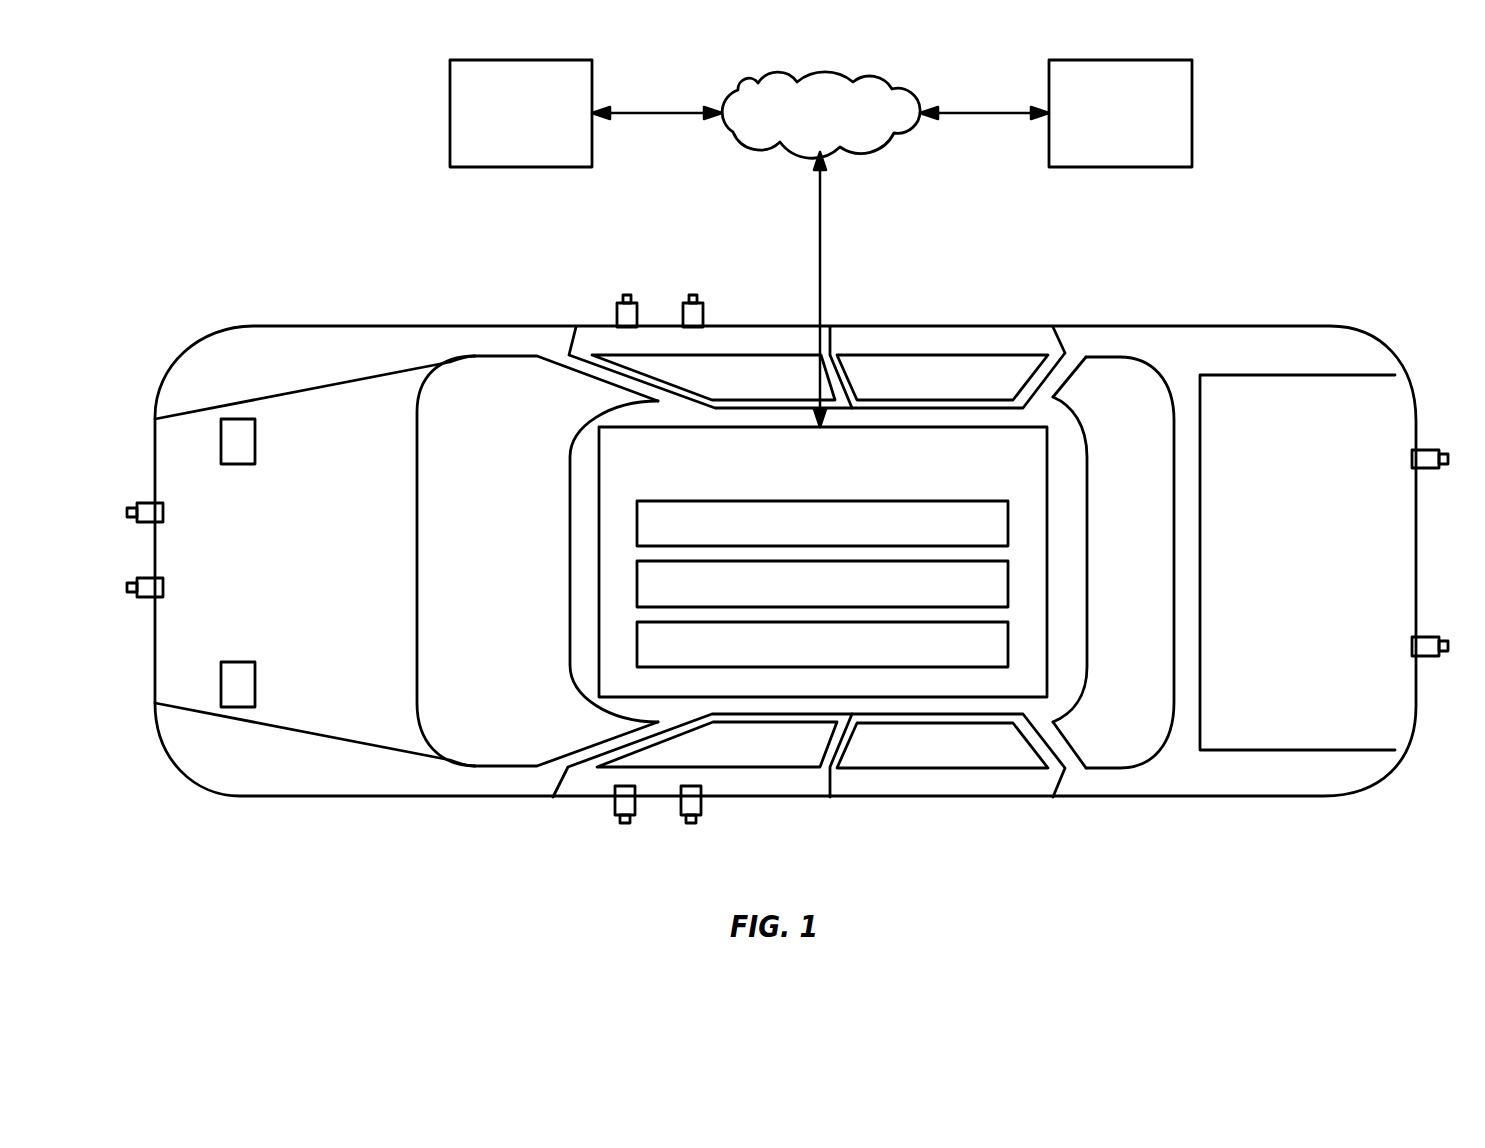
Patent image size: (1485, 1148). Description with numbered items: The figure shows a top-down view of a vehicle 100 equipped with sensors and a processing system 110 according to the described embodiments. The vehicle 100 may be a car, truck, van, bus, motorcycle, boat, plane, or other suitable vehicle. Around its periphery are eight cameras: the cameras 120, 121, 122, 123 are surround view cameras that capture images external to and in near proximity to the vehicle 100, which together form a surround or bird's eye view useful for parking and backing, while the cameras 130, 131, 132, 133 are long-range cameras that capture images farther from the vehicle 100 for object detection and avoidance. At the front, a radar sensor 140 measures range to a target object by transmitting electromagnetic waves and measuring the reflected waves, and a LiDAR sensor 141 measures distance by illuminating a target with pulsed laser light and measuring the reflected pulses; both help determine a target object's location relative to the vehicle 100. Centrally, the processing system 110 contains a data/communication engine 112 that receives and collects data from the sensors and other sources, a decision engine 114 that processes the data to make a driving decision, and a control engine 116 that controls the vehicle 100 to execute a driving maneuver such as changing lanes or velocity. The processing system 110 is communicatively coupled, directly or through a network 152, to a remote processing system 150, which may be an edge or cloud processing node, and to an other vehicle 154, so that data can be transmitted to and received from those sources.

The vehicle 100 is at (302, 325).
The processing system 110 is at (838, 462).
The data/communication engine 112 is at (994, 536).
The decision engine 114 is at (994, 597).
The control engine 116 is at (994, 659).
The camera 120 is at (148, 503).
The camera 121 is at (625, 823).
The camera 122 is at (627, 295).
The camera 123 is at (1425, 468).
The camera 130 is at (148, 578).
The camera 131 is at (690, 823).
The camera 132 is at (693, 295).
The camera 133 is at (1425, 656).
The radar sensor 140 is at (253, 464).
The LiDAR sensor 141 is at (225, 662).
The remote processing system 150 is at (536, 124).
The network 152 is at (837, 124).
The other vehicle 154 is at (1136, 124).